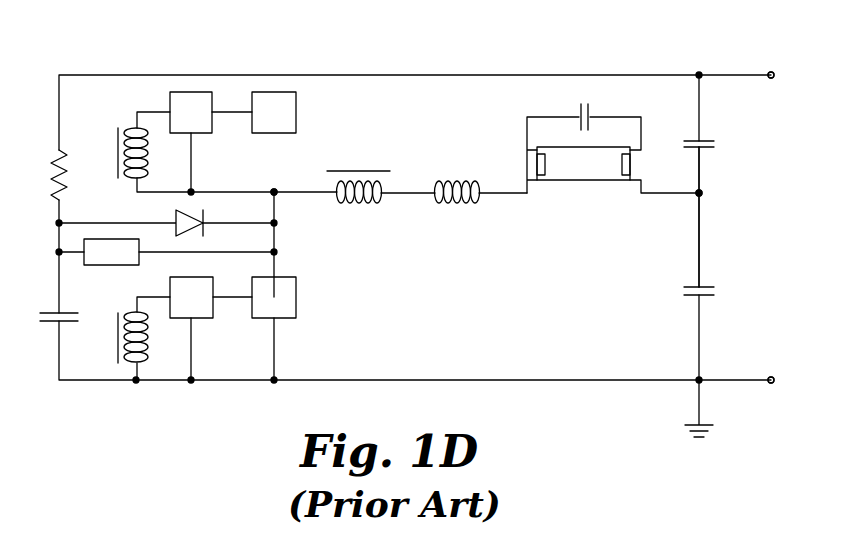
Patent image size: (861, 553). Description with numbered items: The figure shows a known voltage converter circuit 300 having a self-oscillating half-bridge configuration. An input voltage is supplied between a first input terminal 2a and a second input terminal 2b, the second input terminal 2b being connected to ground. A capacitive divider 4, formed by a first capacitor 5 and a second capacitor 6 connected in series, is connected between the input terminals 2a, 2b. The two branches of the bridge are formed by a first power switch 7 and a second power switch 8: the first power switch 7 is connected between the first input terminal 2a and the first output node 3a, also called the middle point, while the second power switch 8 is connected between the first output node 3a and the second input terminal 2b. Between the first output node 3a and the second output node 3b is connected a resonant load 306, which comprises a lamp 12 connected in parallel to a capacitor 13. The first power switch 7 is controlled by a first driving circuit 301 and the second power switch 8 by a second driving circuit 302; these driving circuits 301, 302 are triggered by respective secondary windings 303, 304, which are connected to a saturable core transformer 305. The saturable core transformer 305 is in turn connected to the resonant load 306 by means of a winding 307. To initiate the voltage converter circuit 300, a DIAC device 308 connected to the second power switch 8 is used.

The voltage converter circuit 300 is at (607, 453).
The first driving circuit 301 is at (191, 92).
The second driving circuit 302 is at (182, 318).
The secondary winding 303 is at (118, 153).
The secondary winding 304 is at (118, 340).
The saturable core transformer 305 is at (363, 206).
The resonant load 306 is at (552, 147).
The winding 307 is at (447, 206).
The DIAC device 308 is at (112, 255).
The first power switch 7 is at (284, 116).
The second power switch 8 is at (296, 297).
The first output node 3a is at (275, 194).
The second output node 3b is at (700, 194).
The first input terminal 2a is at (771, 72).
The second input terminal 2b is at (770, 383).
The capacitive divider 4 is at (795, 186).
The first capacitor 5 is at (707, 139).
The second capacitor 6 is at (712, 287).
The lamp 12 is at (590, 180).
The capacitor 13 is at (580, 110).